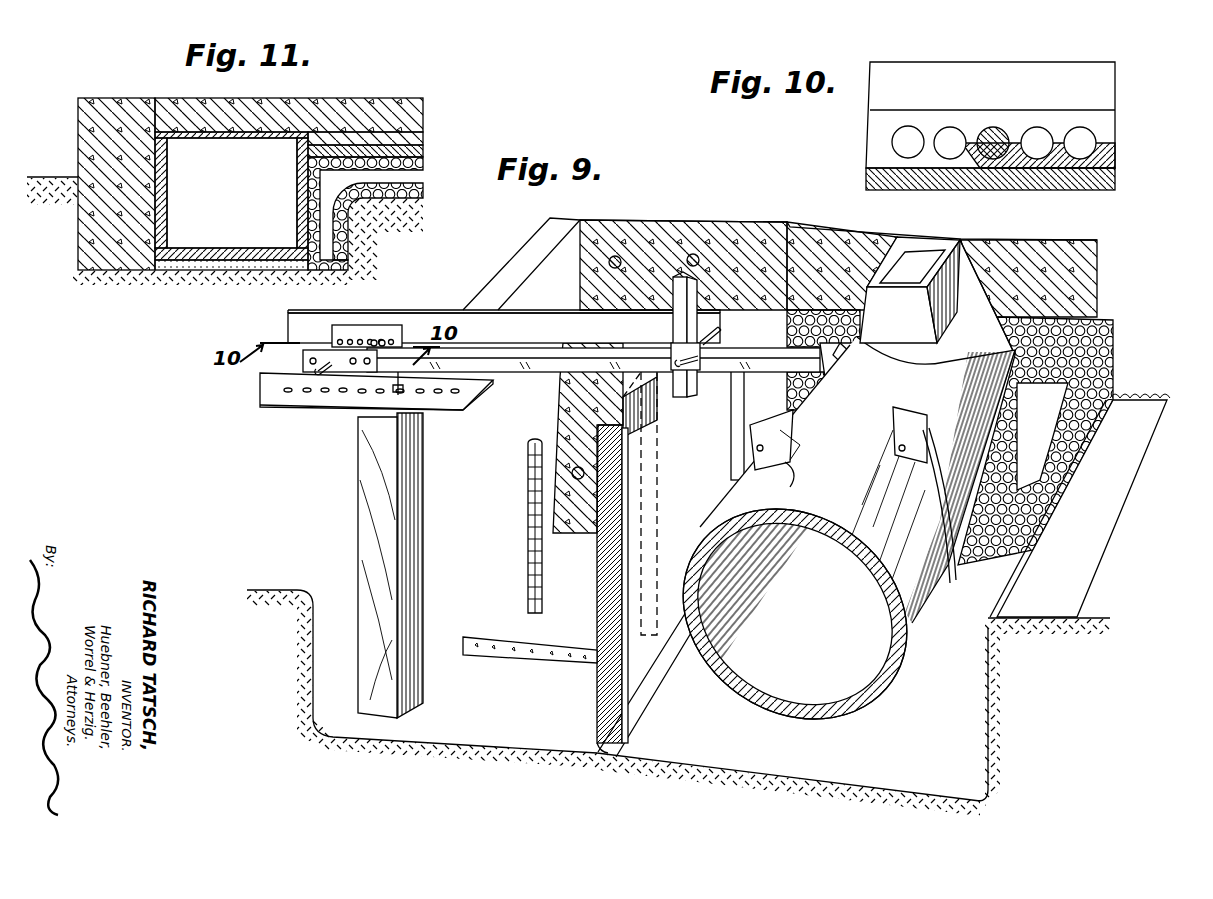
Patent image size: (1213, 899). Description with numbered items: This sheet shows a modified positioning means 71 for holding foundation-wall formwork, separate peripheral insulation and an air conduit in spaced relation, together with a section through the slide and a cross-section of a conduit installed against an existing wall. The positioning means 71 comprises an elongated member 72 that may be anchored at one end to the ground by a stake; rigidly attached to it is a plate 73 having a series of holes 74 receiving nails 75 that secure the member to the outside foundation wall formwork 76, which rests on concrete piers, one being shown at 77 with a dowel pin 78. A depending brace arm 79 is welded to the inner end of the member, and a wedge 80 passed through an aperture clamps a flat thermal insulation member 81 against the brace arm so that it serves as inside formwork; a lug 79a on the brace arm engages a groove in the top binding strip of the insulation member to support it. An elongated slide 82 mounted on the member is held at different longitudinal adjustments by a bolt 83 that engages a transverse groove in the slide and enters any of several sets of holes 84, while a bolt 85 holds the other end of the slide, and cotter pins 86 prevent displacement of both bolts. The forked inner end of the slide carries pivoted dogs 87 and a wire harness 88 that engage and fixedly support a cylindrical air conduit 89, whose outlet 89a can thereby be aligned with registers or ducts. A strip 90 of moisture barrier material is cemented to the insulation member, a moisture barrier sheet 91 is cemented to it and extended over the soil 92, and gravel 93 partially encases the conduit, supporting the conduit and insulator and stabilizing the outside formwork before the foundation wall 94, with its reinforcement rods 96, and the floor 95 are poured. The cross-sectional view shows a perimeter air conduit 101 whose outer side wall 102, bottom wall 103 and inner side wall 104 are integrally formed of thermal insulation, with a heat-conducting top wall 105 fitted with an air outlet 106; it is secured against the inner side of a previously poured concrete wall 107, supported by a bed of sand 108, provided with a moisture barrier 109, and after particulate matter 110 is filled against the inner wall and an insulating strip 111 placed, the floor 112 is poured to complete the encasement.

In FIG. 10, the positioning means 71 is at (947, 187).
In FIG. 9, the positioning means 71 is at (567, 305).
In FIG. 10, the elongated member 72 is at (990, 62).
In FIG. 9, the elongated member 72 is at (500, 322).
In FIG. 9, the plate 73 is at (290, 400).
In FIG. 9, the holes 74 is at (330, 392).
In FIG. 9, the nails 75 is at (395, 392).
In FIG. 9, the outside foundation wall formwork 76 is at (412, 450).
In FIG. 9, the concrete pier 77 is at (494, 650).
In FIG. 9, the dowel pin 78 is at (528, 446).
In FIG. 9, the depending brace arm 79 is at (660, 530).
In FIG. 9, the lug 79a is at (662, 403).
In FIG. 9, the wedge 80 is at (690, 290).
In FIG. 9, the flat thermal insulation member 81 is at (598, 678).
In FIG. 10, the elongated slide 82 is at (1097, 138).
In FIG. 9, the elongated slide 82 is at (532, 352).
In FIG. 10, the bolt 83 is at (996, 126).
In FIG. 9, the bolt 83 is at (356, 325).
In FIG. 10, the holes 84 is at (943, 137).
In FIG. 9, the holes 84 is at (375, 341).
In FIG. 9, the bolt 85 is at (708, 340).
In FIG. 9, the cotter pins 86 is at (320, 366).
In FIG. 9, the pivoted dogs 87 is at (784, 440).
In FIG. 9, the wire harness 88 is at (925, 478).
In FIG. 9, the air conduit 89 is at (857, 548).
In FIG. 9, the outlet 89a is at (910, 290).
In FIG. 9, the strip of moisture barrier material 90 is at (642, 758).
In FIG. 9, the moisture barrier sheet 91 is at (737, 775).
In FIG. 9, the soil 92 is at (1055, 618).
In FIG. 9, the gravel 93 is at (1122, 345).
In FIG. 9, the foundation wall 94 is at (683, 224).
In FIG. 9, the floor 95 is at (1057, 244).
In FIG. 9, the reinforcement rods 96 is at (607, 264).
In FIG. 11, the perimeter air conduit 101 is at (232, 193).
In FIG. 11, the outer side wall 102 is at (184, 193).
In FIG. 11, the bottom wall 103 is at (239, 250).
In FIG. 11, the inner side wall 104 is at (291, 193).
In FIG. 11, the top wall 105 is at (236, 142).
In FIG. 11, the air outlet 106 is at (240, 99).
In FIG. 11, the previously poured concrete wall 107 is at (126, 98).
In FIG. 11, the bed of sand 108 is at (173, 272).
In FIG. 11, the moisture barrier 109 is at (385, 239).
In FIG. 11, the particulate matter 110 is at (345, 219).
In FIG. 11, the insulating strip 111 is at (362, 140).
In FIG. 11, the floor 112 is at (358, 140).